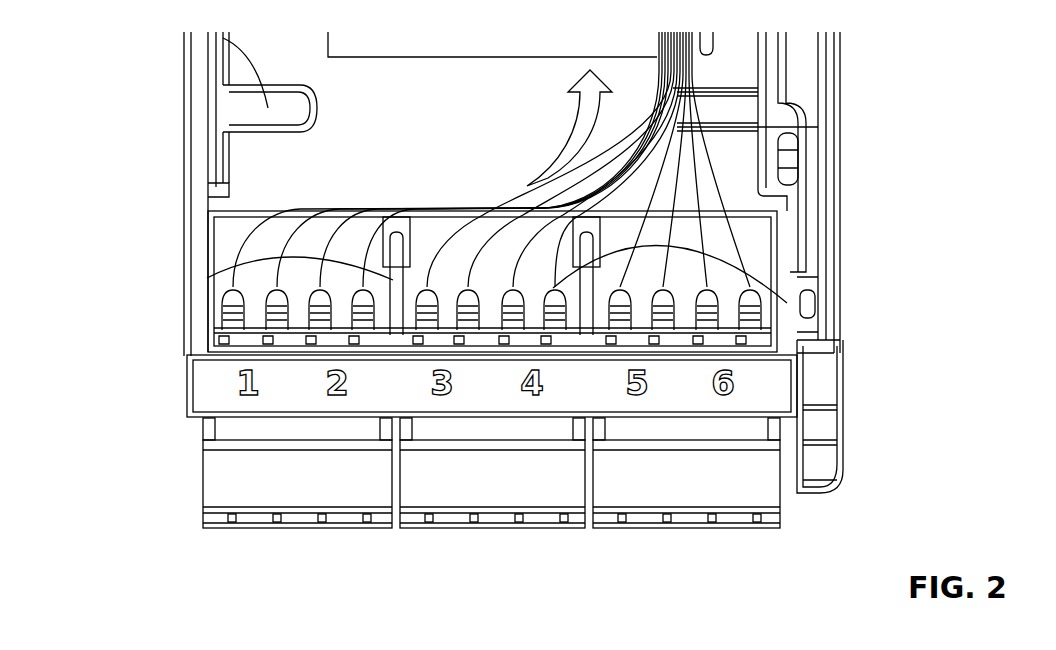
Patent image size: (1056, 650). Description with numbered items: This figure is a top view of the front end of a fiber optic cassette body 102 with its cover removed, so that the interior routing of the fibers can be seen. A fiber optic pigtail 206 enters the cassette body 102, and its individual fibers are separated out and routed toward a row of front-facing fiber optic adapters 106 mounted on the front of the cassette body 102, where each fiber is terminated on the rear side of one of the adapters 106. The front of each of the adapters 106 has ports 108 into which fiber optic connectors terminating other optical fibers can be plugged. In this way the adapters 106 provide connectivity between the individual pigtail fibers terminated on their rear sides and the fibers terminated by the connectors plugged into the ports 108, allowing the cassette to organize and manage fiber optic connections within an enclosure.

The cassette body 102 is at (187, 207).
The front-facing adapters 106 is at (218, 492).
The ports 108 is at (273, 520).
The fiber optic pigtail 206 is at (283, 168).